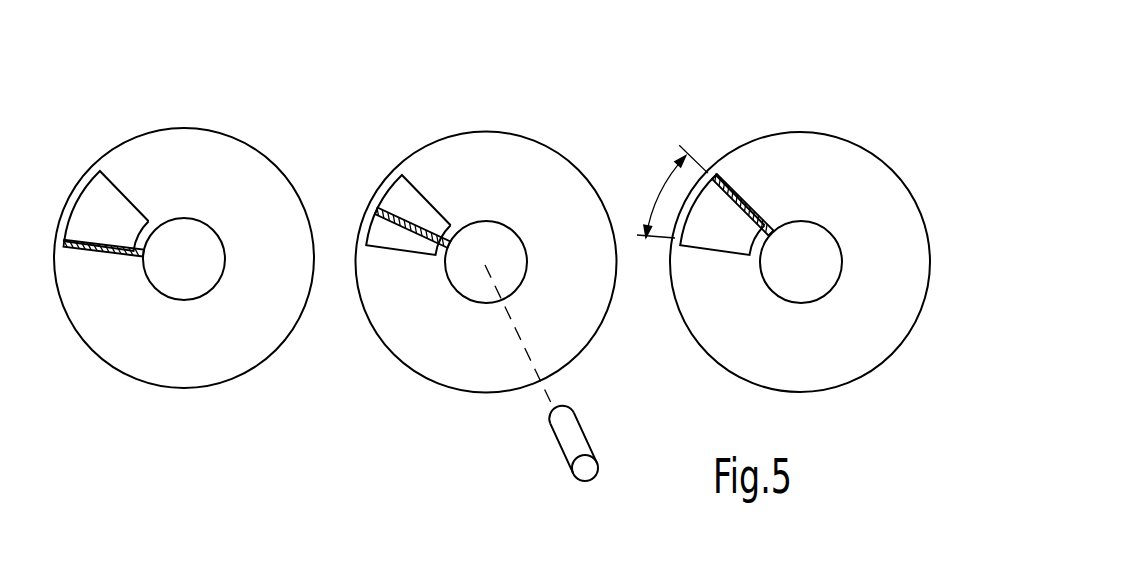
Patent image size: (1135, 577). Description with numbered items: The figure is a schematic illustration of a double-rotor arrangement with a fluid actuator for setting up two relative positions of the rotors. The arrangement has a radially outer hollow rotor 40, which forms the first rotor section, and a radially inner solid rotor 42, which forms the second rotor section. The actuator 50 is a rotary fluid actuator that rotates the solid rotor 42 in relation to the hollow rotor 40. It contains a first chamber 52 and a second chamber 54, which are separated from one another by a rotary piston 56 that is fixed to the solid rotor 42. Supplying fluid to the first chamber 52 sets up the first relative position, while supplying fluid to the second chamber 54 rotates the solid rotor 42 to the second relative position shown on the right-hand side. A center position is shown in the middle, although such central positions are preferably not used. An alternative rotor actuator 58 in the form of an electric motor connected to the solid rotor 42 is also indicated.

The hollow rotor 40 is at (205, 163).
The solid rotor 42 is at (195, 275).
The actuator 50 is at (125, 188).
The first chamber 52 is at (95, 212).
The second chamber 54 is at (397, 237).
The rotary piston 56 is at (404, 224).
The alternative rotor actuator 58 is at (563, 440).